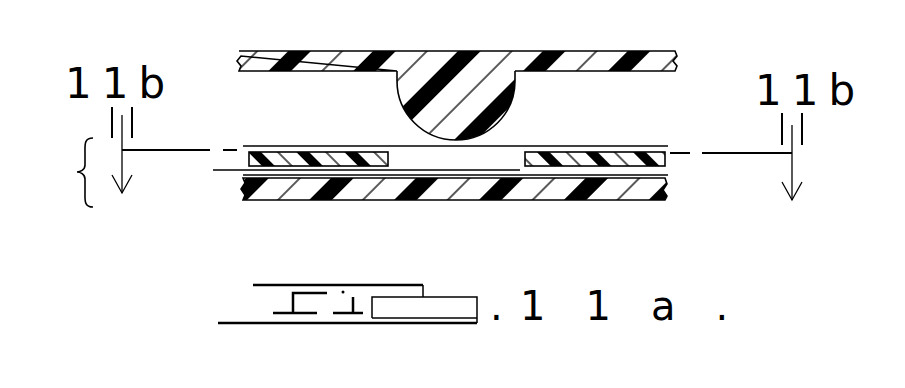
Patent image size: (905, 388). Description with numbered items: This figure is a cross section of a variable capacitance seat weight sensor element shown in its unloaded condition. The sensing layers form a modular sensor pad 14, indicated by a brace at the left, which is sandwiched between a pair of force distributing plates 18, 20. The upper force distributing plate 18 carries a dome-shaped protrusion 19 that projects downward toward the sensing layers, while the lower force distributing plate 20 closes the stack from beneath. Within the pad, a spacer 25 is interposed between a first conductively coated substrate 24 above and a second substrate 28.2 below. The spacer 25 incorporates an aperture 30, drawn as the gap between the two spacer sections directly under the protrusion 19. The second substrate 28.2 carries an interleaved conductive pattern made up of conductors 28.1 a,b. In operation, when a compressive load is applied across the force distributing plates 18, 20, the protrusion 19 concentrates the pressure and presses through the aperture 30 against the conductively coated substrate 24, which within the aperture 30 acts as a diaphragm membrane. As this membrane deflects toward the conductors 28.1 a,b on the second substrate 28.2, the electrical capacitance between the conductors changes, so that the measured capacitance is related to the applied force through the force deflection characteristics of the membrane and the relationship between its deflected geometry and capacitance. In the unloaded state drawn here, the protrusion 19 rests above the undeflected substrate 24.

The modular sensor pad 14 is at (66, 172).
The force distributing plate 18 is at (602, 57).
The protrusion 19 is at (506, 114).
The force distributing plate 20 is at (655, 199).
The conductively coated substrate 24 is at (293, 150).
The spacer 25 is at (643, 158).
The conductors 28.1 is at (256, 175).
The second substrate 28.2 is at (665, 181).
The aperture 30 is at (403, 163).